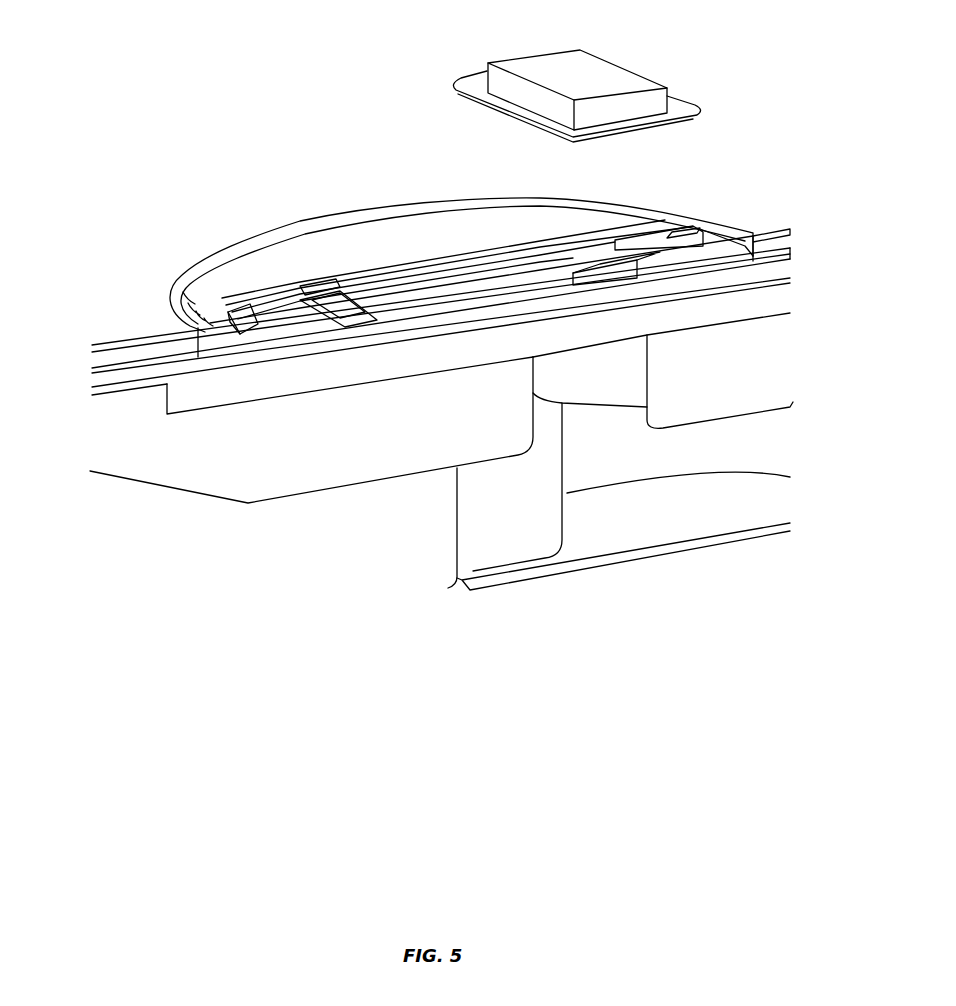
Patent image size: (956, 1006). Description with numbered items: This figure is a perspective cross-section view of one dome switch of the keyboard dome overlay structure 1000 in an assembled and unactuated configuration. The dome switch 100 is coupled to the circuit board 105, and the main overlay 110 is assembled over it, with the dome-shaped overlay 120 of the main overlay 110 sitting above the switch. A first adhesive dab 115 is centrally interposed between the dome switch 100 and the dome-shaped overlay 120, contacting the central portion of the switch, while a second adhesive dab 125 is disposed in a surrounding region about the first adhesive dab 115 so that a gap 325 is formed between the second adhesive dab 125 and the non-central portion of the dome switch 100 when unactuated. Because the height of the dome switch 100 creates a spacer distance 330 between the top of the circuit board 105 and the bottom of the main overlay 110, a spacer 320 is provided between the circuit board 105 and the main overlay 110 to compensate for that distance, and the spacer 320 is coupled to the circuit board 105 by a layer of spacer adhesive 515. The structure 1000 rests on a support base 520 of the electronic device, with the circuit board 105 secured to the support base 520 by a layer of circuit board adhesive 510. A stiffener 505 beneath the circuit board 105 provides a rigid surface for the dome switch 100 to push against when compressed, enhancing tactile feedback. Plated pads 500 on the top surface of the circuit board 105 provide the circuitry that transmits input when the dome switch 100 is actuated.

The keyboard dome overlay structure 1000 is at (205, 121).
The dome switch 100 is at (240, 310).
The circuit board 105 is at (152, 370).
The main overlay 110 is at (143, 337).
The first adhesive dab 115 is at (348, 285).
The dome-shaped overlay 120 is at (407, 225).
The second adhesive dab 125 is at (252, 322).
The spacer 320 is at (775, 246).
The gap 325 is at (277, 295).
The spacer distance 330 is at (138, 340).
The plated pads 500 is at (553, 277).
The stiffener 505 is at (185, 395).
The circuit board adhesive 510 is at (280, 360).
The spacer adhesive 515 is at (782, 266).
The support base 520 is at (172, 463).